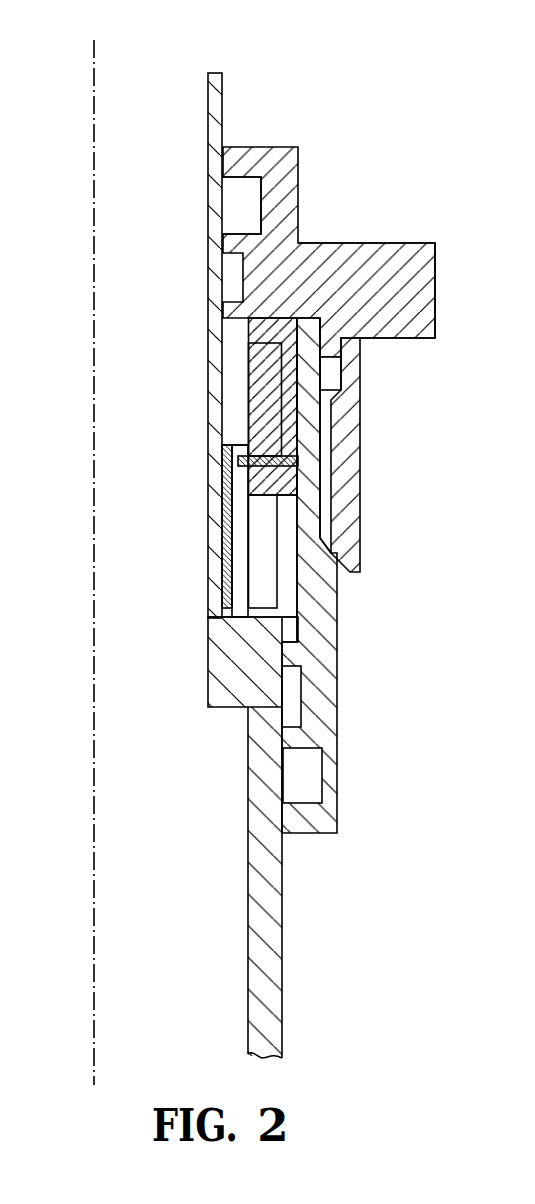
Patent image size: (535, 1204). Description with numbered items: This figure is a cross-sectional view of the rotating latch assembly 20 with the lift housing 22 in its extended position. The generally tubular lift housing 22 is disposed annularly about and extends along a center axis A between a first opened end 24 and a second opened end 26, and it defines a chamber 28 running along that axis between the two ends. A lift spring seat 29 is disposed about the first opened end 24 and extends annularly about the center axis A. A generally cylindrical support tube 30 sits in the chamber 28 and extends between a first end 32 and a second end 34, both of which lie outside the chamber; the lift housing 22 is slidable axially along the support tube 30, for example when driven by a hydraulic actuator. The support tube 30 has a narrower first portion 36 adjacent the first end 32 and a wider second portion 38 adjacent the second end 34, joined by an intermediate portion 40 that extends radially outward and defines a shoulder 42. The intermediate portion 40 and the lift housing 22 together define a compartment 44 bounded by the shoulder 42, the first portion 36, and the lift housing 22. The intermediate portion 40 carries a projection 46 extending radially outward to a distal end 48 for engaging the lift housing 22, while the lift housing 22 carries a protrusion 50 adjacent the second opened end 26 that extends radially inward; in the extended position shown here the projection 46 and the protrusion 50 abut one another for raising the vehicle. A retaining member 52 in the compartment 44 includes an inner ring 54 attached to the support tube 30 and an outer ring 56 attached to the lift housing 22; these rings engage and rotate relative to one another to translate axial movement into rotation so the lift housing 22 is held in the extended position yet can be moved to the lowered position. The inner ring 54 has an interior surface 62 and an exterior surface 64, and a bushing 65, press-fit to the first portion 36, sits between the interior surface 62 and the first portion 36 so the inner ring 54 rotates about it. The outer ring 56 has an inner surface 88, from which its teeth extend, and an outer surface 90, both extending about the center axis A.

The center axis A is at (94, 88).
The rotating latch assembly 20 is at (349, 79).
The lift housing 22 is at (323, 687).
The first opened end 24 is at (318, 317).
The second opened end 26 is at (316, 833).
The chamber 28 is at (300, 690).
The lift spring seat 29 is at (400, 258).
The support tube 30 is at (268, 959).
The first end 32 is at (213, 73).
The second end 34 is at (282, 1058).
The first portion 36 is at (215, 231).
The second portion 38 is at (258, 888).
The intermediate portion 40 is at (217, 659).
The shoulder 42 is at (235, 613).
The compartment 44 is at (296, 543).
The projection 46 is at (296, 637).
The distal end 48 is at (296, 630).
The protrusion 50 is at (293, 652).
The retaining member 52 is at (243, 402).
The inner ring 54 is at (238, 519).
The outer ring 56 is at (292, 405).
The interior surface 62 is at (226, 555).
The exterior surface 64 is at (250, 573).
The bushing 65 is at (232, 480).
The inner surface 88 is at (249, 343).
The outer surface 90 is at (300, 372).